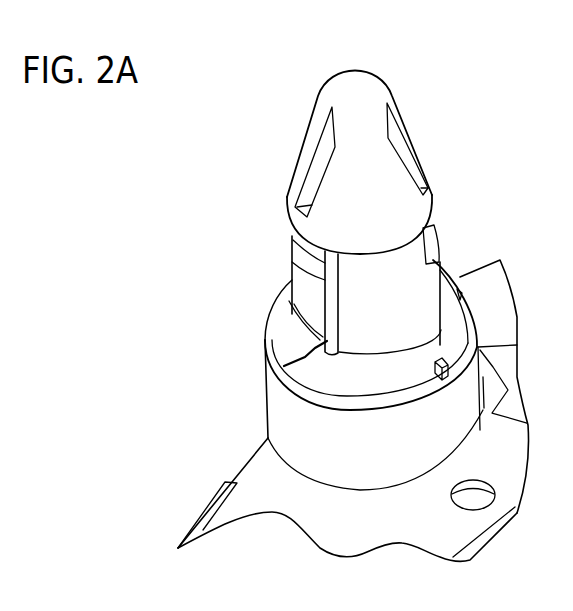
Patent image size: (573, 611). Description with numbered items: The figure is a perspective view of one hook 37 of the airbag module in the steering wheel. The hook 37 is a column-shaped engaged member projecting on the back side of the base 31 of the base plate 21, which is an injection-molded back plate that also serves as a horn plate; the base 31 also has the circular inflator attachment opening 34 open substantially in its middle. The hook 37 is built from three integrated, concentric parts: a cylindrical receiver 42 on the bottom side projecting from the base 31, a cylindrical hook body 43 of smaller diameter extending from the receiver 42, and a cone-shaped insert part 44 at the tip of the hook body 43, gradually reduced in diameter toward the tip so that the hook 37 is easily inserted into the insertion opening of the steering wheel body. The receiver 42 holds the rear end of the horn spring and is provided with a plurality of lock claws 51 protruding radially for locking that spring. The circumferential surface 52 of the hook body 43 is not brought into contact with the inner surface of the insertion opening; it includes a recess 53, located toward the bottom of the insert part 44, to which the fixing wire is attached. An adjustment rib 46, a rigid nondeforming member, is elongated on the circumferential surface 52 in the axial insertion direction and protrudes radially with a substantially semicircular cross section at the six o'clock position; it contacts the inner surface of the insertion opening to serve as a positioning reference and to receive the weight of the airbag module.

The hook 37 is at (387, 68).
The insert part 44 is at (390, 103).
The hook body 43 is at (433, 267).
The recess 53 is at (295, 246).
The circumferential surface 52 is at (307, 288).
The adjustment rib 46 is at (324, 309).
The lock claw 51 is at (282, 346).
The receiver 42 is at (283, 389).
The base 31 is at (263, 512).
The base plate 21 is at (352, 554).
The inflator attachment opening 34 is at (487, 542).